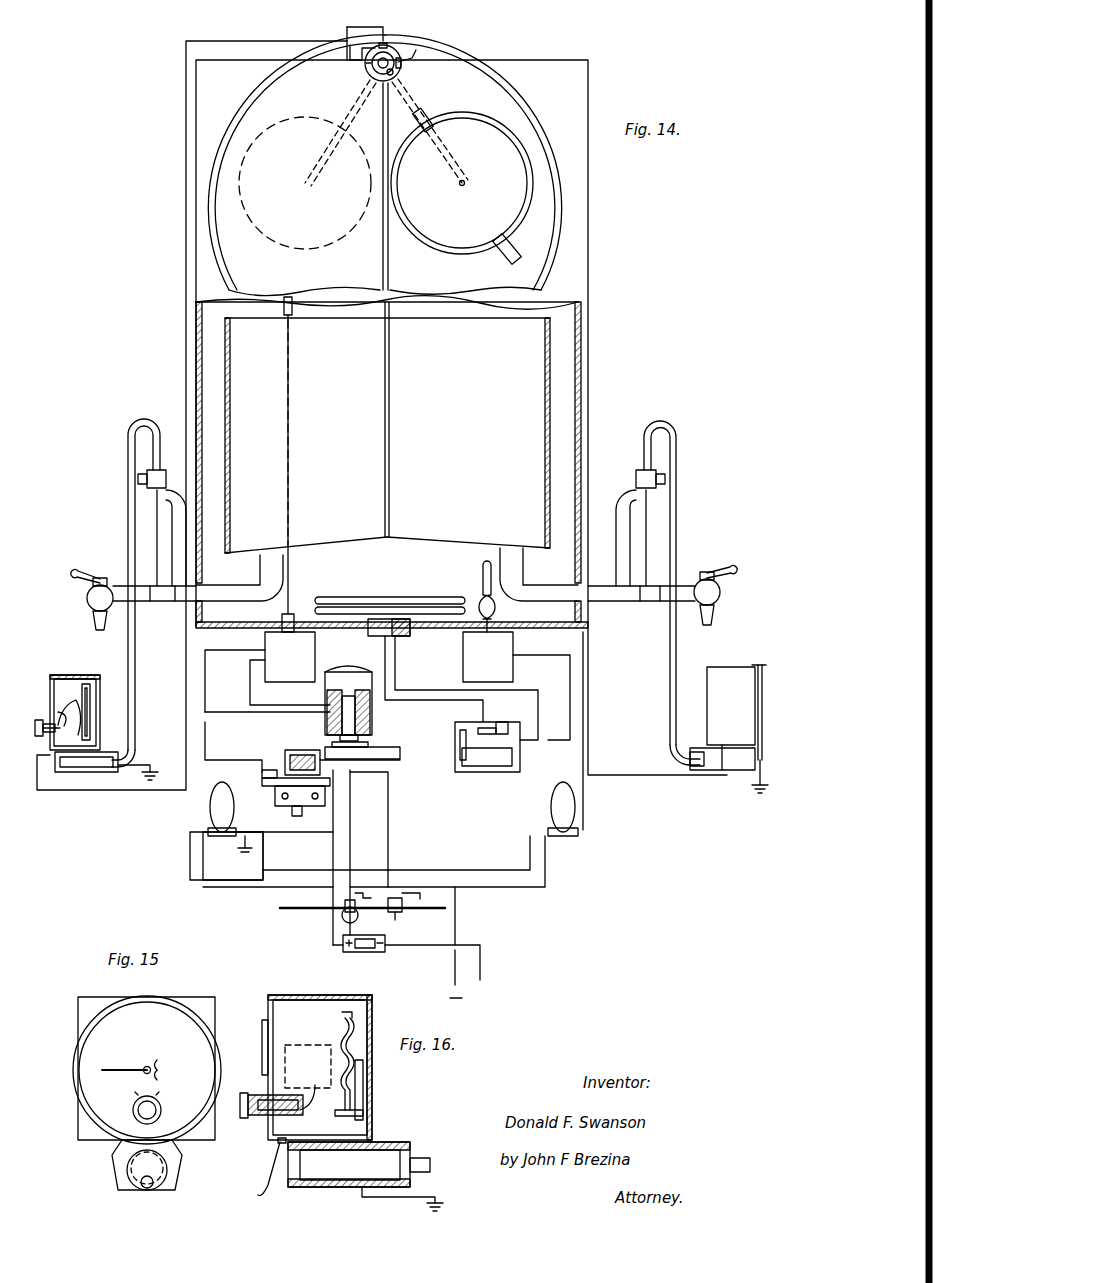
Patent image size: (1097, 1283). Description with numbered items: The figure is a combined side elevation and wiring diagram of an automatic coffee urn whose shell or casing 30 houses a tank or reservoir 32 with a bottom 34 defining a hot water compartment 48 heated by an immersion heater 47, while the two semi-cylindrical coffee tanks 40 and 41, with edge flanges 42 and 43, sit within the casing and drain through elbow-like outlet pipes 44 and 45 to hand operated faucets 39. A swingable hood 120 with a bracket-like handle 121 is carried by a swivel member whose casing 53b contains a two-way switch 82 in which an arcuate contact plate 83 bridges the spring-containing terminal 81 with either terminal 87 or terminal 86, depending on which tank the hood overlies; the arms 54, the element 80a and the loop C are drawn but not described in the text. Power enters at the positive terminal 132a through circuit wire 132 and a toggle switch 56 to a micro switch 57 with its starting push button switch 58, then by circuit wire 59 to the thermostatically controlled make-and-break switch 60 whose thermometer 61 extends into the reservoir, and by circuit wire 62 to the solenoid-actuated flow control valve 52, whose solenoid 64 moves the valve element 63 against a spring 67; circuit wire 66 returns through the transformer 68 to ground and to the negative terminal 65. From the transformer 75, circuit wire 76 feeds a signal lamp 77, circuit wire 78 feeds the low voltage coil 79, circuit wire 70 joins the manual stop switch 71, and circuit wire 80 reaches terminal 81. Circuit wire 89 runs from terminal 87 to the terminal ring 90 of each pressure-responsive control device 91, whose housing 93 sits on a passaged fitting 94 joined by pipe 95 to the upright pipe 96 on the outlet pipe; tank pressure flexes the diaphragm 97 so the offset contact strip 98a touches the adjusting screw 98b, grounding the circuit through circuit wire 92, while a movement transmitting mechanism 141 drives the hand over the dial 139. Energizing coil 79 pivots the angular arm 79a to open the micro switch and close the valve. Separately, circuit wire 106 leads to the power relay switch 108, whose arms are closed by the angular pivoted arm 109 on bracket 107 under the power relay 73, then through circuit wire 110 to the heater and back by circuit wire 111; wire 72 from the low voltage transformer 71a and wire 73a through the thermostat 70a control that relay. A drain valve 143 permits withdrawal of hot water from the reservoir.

In FIG. 14, the shell or casing 30 is at (461, 417).
In FIG. 14, the tank or reservoir 32 is at (200, 356).
In FIG. 14, the bottom 34 is at (498, 609).
In FIG. 14, the faucets 39 is at (85, 600).
In FIG. 14, the metal compartment or tank 40 is at (268, 260).
In FIG. 14, the metal compartment or tank 41 is at (462, 276).
In FIG. 14, the edge flange 42 is at (244, 126).
In FIG. 14, the edge flange 43 is at (520, 125).
In FIG. 14, the outlet pipe 44 is at (255, 574).
In FIG. 14, the outlet pipe 45 is at (528, 585).
In FIG. 14, the heater 47 is at (410, 606).
In FIG. 14, the hot water compartment 48 is at (395, 578).
In FIG. 14, the solenoid-actuated flow control valve 52 is at (337, 675).
In FIG. 14, the casing of swivel member 53b is at (398, 70).
In FIG. 14, the agitator arms 54 is at (312, 185).
In FIG. 14, the toggle switch 56 is at (353, 956).
In FIG. 14, the micro switch 57 is at (300, 808).
In FIG. 14, the starting push button switch 58 is at (282, 817).
In FIG. 14, the circuit wire 59 is at (232, 666).
In FIG. 14, the thermostatically controlled make-and-break switch 60 is at (300, 665).
In FIG. 14, the thermometer 61 is at (296, 575).
In FIG. 14, the circuit wire 62 is at (252, 694).
In FIG. 14, the movable valve element 63 is at (372, 732).
In FIG. 14, the solenoid 64 is at (352, 690).
In FIG. 14, the negative terminal 65 is at (455, 990).
In FIG. 14, the circuit wire 66 is at (258, 716).
In FIG. 14, the spring 67 is at (372, 722).
In FIG. 14, the transformer 68 is at (226, 856).
In FIG. 14, the circuit wire 70 is at (388, 826).
In FIG. 14, the thermostat 70a is at (500, 665).
In FIG. 14, the manual stop switch 71 is at (413, 912).
In FIG. 14, the low voltage transformer 71a is at (580, 827).
In FIG. 14, the wire 72 is at (583, 698).
In FIG. 14, the power relay 73 is at (468, 772).
In FIG. 14, the wire 73a is at (570, 672).
In FIG. 14, the transformer 75 is at (240, 828).
In FIG. 14, the circuit wire 76 is at (352, 856).
In FIG. 14, the signal lamp 77 is at (357, 920).
In FIG. 14, the circuit wire 78 is at (350, 808).
In FIG. 14, the low voltage electric coil 79 is at (295, 752).
In FIG. 14, the angular arm 79a is at (265, 780).
In FIG. 14, the circuit wire 80 is at (350, 27).
In FIG. 14, the relay arm 80a is at (349, 743).
In FIG. 14, the spring-containing terminal 81 is at (392, 50).
In FIG. 14, the two-way switch 82 is at (372, 72).
In FIG. 14, the arcuate contact plate 83 is at (408, 49).
In FIG. 14, the terminal 86 is at (408, 57).
In FIG. 14, the contact terminal 87 is at (360, 68).
In FIG. 14, the circuit wire 89 is at (300, 44).
In FIG. 16, the circuit wire 89 is at (262, 1188).
In FIG. 14, the metal terminal ring 90 is at (58, 712).
In FIG. 16, the metal terminal ring 90 is at (275, 1082).
In FIG. 14, the pressure-responsive control device and switch 91 is at (76, 674).
In FIG. 15, the pressure-responsive control device and switch 91 is at (78, 1138).
In FIG. 16, the pressure-responsive control device and switch 91 is at (295, 1020).
In FIG. 14, the circuit wire 92 is at (451, 759).
In FIG. 16, the circuit wire 92 is at (362, 1192).
In FIG. 14, the enclosing shell or housing 93 is at (50, 685).
In FIG. 15, the enclosing shell or housing 93 is at (113, 998).
In FIG. 16, the enclosing shell or housing 93 is at (317, 996).
In FIG. 14, the passaged fitting or member 94 is at (405, 751).
In FIG. 15, the passaged fitting or member 94 is at (120, 1163).
In FIG. 16, the passaged fitting or member 94 is at (390, 1140).
In FIG. 14, the pipe 95 is at (128, 657).
In FIG. 16, the pipe 95 is at (425, 1160).
In FIG. 14, the pipe 96 is at (162, 554).
In FIG. 14, the expandable diaphragm 97 is at (90, 690).
In FIG. 16, the expandable diaphragm 97 is at (350, 1022).
In FIG. 14, the offset contact strip 98a is at (69, 706).
In FIG. 16, the offset contact strip 98a is at (316, 1107).
In FIG. 14, the adjusting screw 98b is at (36, 733).
In FIG. 15, the adjusting screw 98b is at (133, 1112).
In FIG. 16, the adjusting screw 98b is at (246, 1120).
In FIG. 14, the circuit wire 106 is at (520, 856).
In FIG. 14, the bracket 107 is at (458, 758).
In FIG. 14, the power relay switch 108 is at (500, 720).
In FIG. 14, the angular pivoted arm 109 is at (478, 730).
In FIG. 14, the circuit wire 110 is at (380, 636).
In FIG. 14, the circuit wire 111 is at (398, 670).
In FIG. 14, the hood 120 is at (318, 213).
In FIG. 14, the bracket-like handle 121 is at (566, 245).
In FIG. 14, the circuit wire 132 is at (333, 935).
In FIG. 14, the positive terminal 132a is at (485, 976).
In FIG. 15, the dial 139 is at (100, 1094).
In FIG. 16, the movement transmitting mechanism 141 is at (308, 1047).
In FIG. 15, the drain valve 143 is at (100, 1050).
In FIG. 16, the drain valve 143 is at (268, 1048).
In FIG. 14, the siphon loop C is at (402, 580).